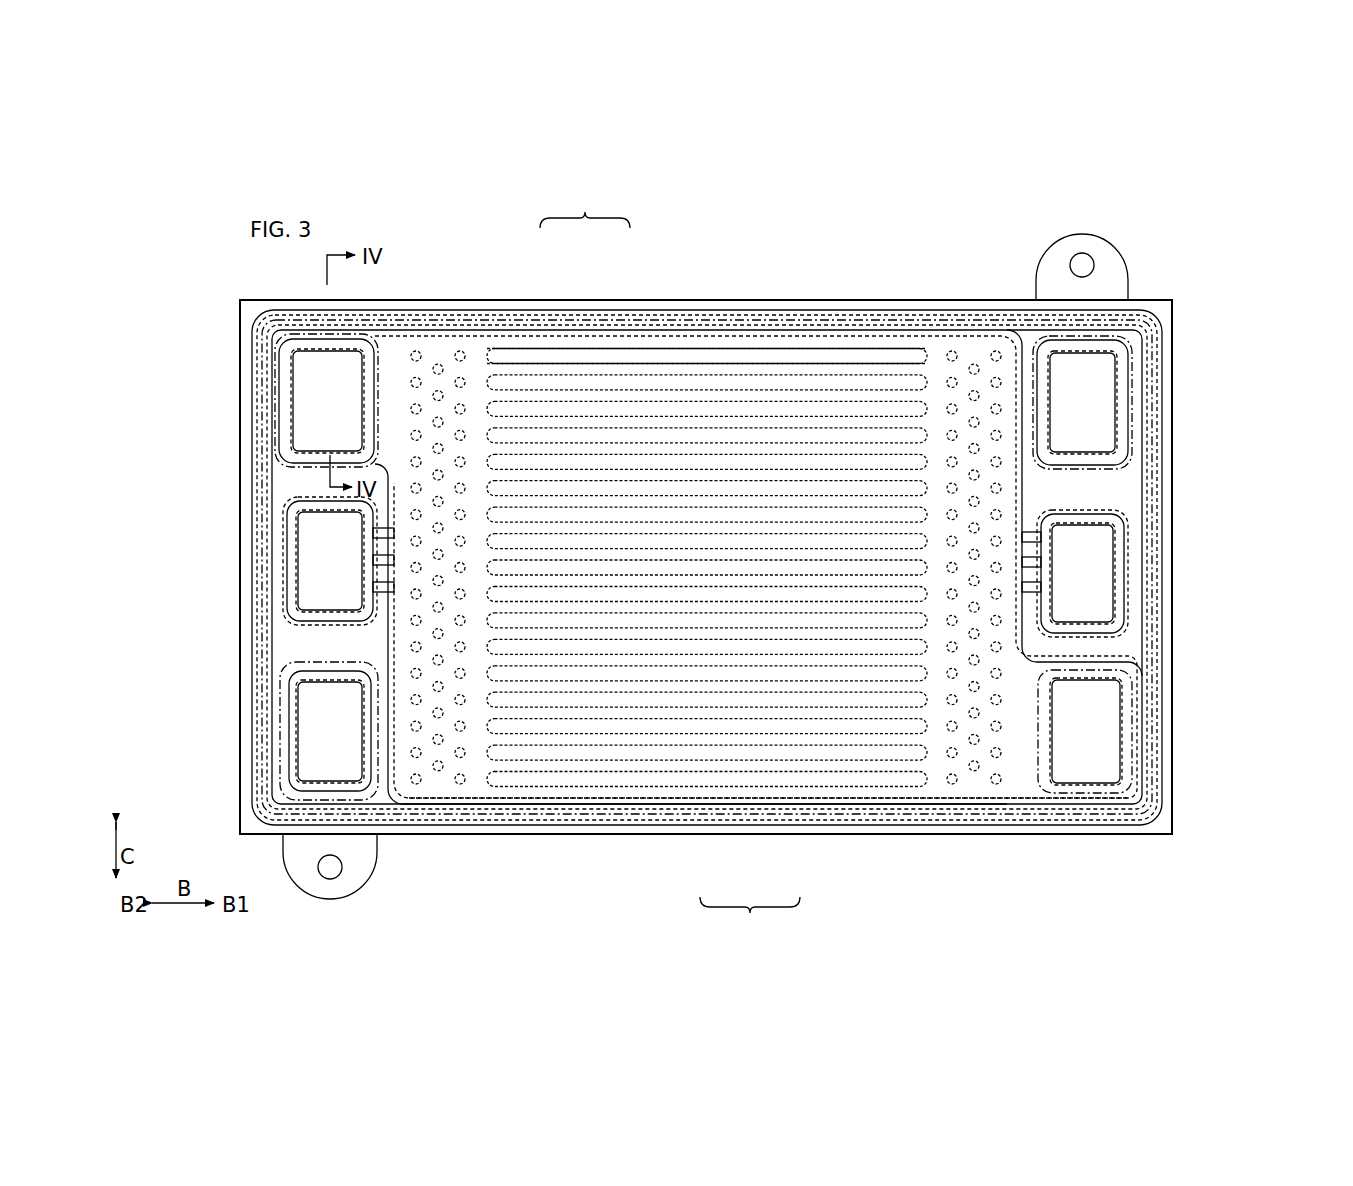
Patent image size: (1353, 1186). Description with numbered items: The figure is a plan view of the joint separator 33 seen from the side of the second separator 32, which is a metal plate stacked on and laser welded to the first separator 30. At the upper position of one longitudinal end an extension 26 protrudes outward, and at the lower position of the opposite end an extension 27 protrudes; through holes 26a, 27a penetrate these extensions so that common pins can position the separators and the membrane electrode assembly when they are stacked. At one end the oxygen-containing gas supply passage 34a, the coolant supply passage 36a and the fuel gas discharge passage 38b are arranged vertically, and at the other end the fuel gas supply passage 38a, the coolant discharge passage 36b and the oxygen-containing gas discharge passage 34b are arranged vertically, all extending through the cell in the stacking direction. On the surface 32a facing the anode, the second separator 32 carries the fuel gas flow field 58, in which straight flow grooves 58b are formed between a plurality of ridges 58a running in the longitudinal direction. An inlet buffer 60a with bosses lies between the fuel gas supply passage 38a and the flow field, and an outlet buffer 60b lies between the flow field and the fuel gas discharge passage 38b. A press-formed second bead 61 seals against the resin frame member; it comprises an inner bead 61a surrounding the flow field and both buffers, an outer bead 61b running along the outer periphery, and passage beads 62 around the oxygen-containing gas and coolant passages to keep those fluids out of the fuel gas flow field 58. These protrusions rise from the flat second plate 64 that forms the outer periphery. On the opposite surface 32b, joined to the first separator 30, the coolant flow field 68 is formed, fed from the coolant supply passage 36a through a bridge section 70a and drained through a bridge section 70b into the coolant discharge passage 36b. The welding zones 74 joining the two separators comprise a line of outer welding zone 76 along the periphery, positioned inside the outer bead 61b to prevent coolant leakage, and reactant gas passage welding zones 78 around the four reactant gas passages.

The extension 26 is at (1080, 236).
The through hole 26a is at (1095, 262).
The extension 27 is at (291, 878).
The through hole 27a is at (331, 878).
The first metal separator 30 is at (473, 297).
The second metal separator 32 is at (424, 300).
The surface 32a is at (497, 812).
The surface 32b is at (540, 820).
The joint separator 33 is at (890, 254).
The oxygen-containing gas supply passage 34a is at (1112, 378).
The oxygen-containing gas discharge passage 34b is at (300, 762).
The coolant supply passage 36a is at (1114, 550).
The coolant discharge passage 36b is at (300, 553).
The fuel gas supply passage 38a is at (300, 372).
The fuel gas discharge passage 38b is at (1114, 722).
The fuel gas flow field 58 is at (585, 207).
The ridges 58a is at (547, 380).
The straight flow grooves 58b is at (607, 372).
The inlet buffer 60a is at (438, 768).
The outlet buffer 60b is at (974, 768).
The second bead 61 is at (755, 917).
The inner bead 61a is at (731, 800).
The outer bead 61b is at (773, 820).
The passage beads 62 is at (290, 666).
The second plate 64 is at (1128, 646).
The coolant flow field 68 is at (703, 345).
The bridge section 70a is at (1030, 537).
The bridge section 70b is at (375, 595).
The welding zones 74 is at (707, 567).
The outer welding zone 76 is at (1045, 820).
The reactant gas passage welding zones 78 is at (262, 336).